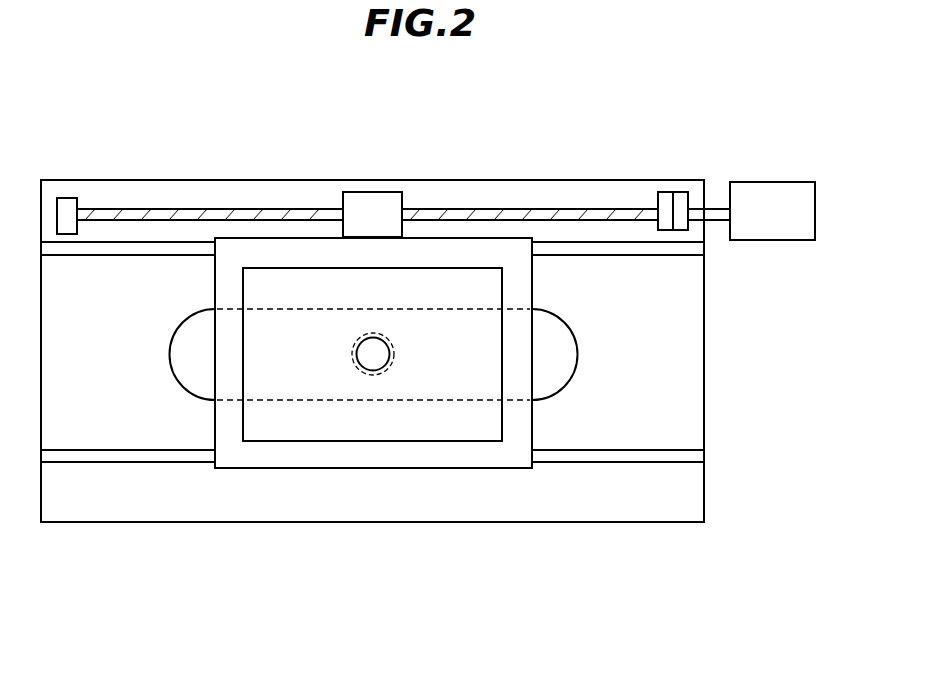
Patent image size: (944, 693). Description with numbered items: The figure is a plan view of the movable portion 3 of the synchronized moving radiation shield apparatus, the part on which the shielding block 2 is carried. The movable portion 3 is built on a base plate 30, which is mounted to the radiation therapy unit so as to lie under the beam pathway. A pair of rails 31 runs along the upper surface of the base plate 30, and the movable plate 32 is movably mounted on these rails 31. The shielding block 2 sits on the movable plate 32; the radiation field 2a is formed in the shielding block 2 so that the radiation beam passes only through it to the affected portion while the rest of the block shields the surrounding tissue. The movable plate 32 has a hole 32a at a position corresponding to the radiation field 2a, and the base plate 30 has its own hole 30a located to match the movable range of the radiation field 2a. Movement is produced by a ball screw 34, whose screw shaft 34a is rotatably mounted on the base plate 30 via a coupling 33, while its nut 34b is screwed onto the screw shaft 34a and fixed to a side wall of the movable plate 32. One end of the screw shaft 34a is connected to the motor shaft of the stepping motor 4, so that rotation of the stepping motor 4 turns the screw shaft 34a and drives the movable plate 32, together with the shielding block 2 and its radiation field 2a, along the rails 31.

The movable portion 3 is at (428, 353).
The base plate 30 is at (688, 365).
The hole 30a is at (179, 360).
The rails 31 is at (617, 247).
The movable plate 32 is at (232, 454).
The hole 32a is at (353, 365).
The coupling 33 is at (681, 224).
The ball screw 34 is at (393, 173).
The screw shaft 34a is at (498, 213).
The nut 34b is at (371, 205).
The stepping motor 4 is at (775, 188).
The shielding block 2 is at (478, 420).
The radiation field 2a is at (373, 354).